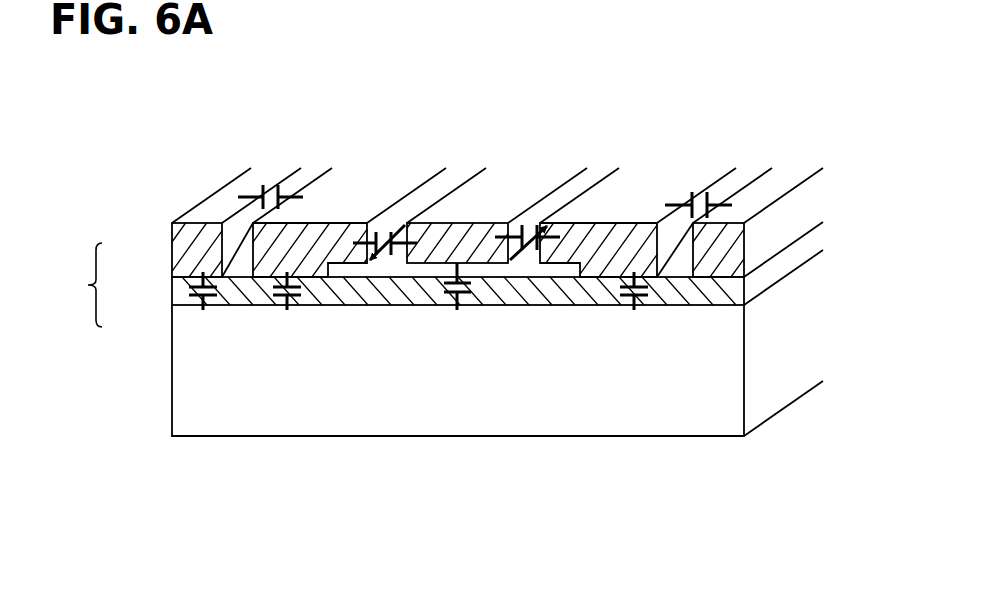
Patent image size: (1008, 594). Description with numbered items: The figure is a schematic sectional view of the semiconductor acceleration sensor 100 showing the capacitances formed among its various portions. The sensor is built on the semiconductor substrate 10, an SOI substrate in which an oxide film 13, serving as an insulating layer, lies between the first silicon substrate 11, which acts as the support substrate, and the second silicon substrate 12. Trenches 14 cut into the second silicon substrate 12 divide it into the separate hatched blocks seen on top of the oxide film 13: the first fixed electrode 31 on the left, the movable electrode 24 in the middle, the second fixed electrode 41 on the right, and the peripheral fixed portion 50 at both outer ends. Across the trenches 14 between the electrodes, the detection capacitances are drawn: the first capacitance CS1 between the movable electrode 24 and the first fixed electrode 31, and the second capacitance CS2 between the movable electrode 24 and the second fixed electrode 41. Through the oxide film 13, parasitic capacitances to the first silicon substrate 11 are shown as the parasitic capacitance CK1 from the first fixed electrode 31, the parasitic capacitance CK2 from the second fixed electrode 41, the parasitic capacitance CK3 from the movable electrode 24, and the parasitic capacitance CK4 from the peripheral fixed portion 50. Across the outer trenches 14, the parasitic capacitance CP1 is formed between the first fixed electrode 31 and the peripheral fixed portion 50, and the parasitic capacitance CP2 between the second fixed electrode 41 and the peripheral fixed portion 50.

The semiconductor substrate 10 is at (77, 285).
The first silicon substrate 11 is at (185, 323).
The second silicon substrate 12 is at (183, 257).
The oxide film 13 is at (183, 285).
The trench 14 is at (233, 237).
The movable electrode 24 is at (492, 188).
The first fixed electrode 31 is at (363, 188).
The second fixed electrode 41 is at (630, 188).
The peripheral fixed portion 50 is at (173, 237).
The semiconductor acceleration sensor 100 is at (222, 440).
The parasitic capacitance CP1 is at (268, 188).
The parasitic capacitance CP2 is at (698, 190).
The first capacitance CS1 is at (388, 228).
The second capacitance CS2 is at (527, 228).
The parasitic capacitance CK1 is at (295, 310).
The parasitic capacitance CK2 is at (638, 309).
The parasitic capacitance CK3 is at (463, 309).
The parasitic capacitance CK4 is at (213, 310).